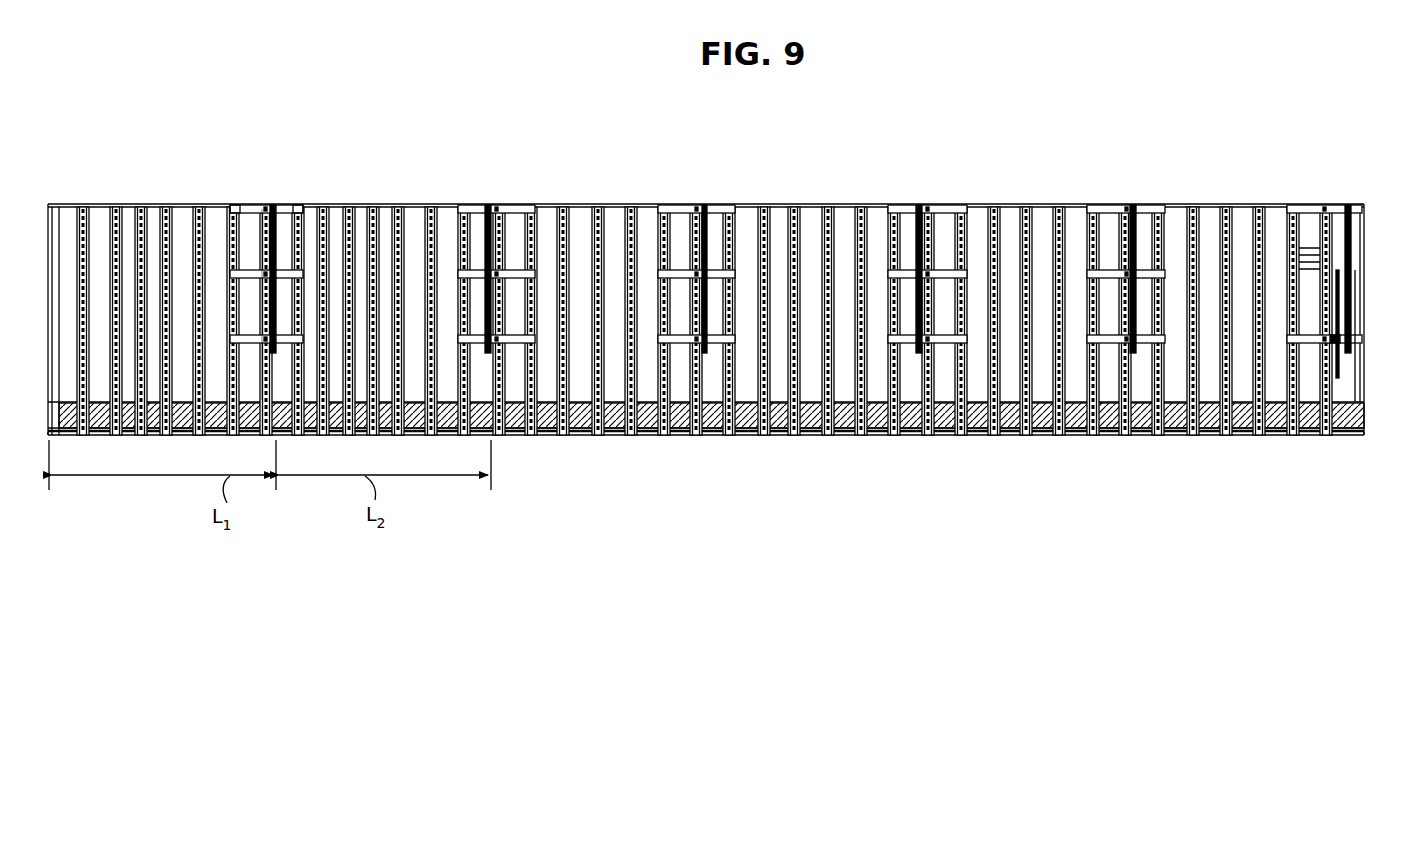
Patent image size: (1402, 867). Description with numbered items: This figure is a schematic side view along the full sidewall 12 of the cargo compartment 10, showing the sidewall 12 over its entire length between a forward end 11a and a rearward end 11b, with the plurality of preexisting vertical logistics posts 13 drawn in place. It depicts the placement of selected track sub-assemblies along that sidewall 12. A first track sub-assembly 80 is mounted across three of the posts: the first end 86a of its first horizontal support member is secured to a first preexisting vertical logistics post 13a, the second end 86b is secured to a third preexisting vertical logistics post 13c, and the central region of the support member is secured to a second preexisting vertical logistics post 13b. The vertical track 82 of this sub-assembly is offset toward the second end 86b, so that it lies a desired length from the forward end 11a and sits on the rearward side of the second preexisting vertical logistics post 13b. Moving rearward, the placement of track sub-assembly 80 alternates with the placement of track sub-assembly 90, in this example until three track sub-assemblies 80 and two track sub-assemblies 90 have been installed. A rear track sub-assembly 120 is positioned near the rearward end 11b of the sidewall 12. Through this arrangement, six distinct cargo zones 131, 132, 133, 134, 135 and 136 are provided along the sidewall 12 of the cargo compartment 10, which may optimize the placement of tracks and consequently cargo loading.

The cargo compartment 10 is at (67, 238).
The forward end 11a is at (48, 433).
The rearward end 11b is at (1364, 433).
The sidewall 12 is at (580, 207).
The preexisting vertical logistics posts 13 is at (638, 232).
The first preexisting vertical logistics post 13a is at (232, 210).
The second preexisting vertical logistics post 13b is at (267, 225).
The third preexisting vertical logistics post 13c is at (299, 215).
The track sub-assembly 80 is at (273, 203).
The vertical track 82 is at (262, 250).
The first end 86a is at (236, 210).
The second end 86b is at (303, 212).
The track sub-assembly 90 is at (489, 203).
The rear track sub-assembly 120 is at (1322, 203).
The cargo zone 131 is at (118, 196).
The cargo zone 132 is at (412, 186).
The cargo zone 133 is at (598, 196).
The cargo zone 134 is at (828, 189).
The cargo zone 135 is at (1025, 193).
The cargo zone 136 is at (1226, 193).